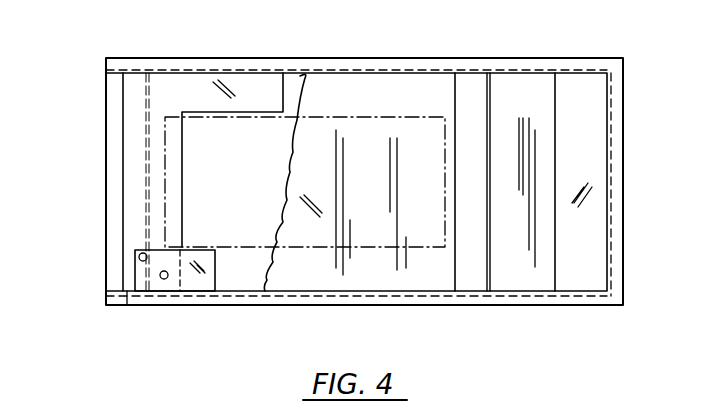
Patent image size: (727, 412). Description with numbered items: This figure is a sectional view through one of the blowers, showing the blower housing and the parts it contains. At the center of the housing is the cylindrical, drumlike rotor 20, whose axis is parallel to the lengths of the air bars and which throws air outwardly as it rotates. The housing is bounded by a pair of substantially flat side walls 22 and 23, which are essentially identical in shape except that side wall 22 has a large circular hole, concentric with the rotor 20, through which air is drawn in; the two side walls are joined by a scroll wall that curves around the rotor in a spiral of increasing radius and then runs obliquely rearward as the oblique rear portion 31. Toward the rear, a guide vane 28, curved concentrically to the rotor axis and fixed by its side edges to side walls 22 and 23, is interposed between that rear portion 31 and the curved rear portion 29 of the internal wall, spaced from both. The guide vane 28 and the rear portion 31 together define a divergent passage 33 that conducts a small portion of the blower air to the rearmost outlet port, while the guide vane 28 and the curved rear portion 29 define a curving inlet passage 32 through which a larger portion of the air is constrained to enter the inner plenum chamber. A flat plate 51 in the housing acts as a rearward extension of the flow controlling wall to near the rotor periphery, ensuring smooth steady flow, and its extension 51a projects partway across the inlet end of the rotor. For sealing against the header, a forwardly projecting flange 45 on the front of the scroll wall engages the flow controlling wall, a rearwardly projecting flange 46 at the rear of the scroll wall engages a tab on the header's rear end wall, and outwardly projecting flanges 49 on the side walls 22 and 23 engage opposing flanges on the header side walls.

The rotor 20 is at (412, 118).
The housing side wall 22 is at (250, 289).
The housing side wall 23 is at (297, 72).
The guide vane 28 is at (533, 157).
The curved rear portion of the internal wall 29 is at (426, 279).
The oblique rear portion of the scroll wall 31 is at (588, 183).
The inlet passage 32 is at (476, 85).
The divergent passage 33 is at (578, 92).
The forwardly projecting flange 45 is at (112, 142).
The rearwardly projecting flange 46 is at (617, 268).
The outwardly projecting flanges 49 is at (400, 65).
The flat plate 51 is at (137, 178).
The extension 51a is at (241, 71).